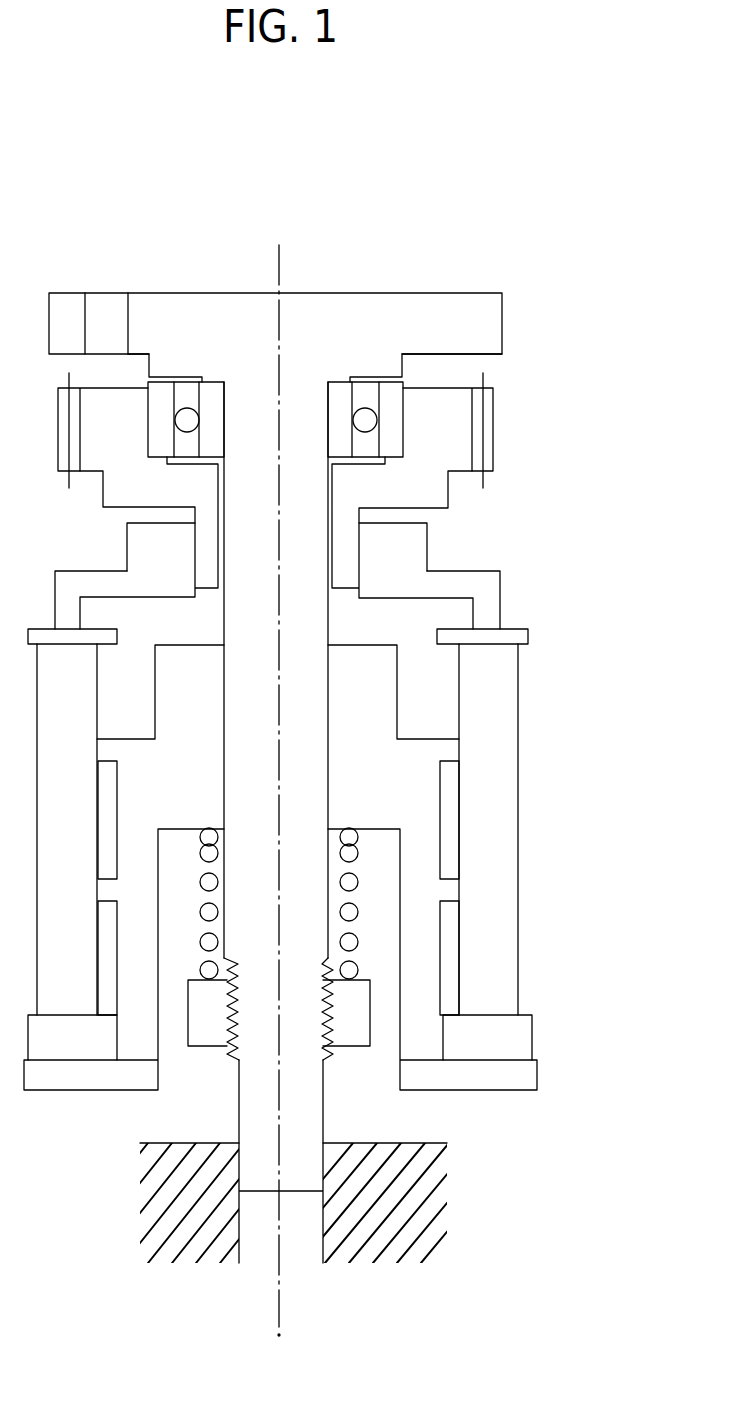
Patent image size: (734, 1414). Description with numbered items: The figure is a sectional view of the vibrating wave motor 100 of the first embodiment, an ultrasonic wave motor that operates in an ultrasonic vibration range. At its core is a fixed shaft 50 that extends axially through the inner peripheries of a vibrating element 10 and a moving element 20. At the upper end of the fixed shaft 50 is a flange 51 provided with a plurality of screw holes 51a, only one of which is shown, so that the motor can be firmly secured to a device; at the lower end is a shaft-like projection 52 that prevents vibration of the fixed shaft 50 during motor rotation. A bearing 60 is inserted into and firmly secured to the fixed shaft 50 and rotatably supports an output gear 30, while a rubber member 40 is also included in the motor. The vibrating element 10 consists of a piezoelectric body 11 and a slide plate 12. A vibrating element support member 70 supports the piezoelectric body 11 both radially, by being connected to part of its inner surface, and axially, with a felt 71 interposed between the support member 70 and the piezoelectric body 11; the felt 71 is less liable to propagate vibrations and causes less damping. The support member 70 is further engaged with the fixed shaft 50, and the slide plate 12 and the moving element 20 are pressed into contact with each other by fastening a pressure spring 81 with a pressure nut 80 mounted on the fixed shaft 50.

The vibrating wave motor 100 is at (607, 176).
The fixed shaft 50 is at (327, 313).
The flange 51 is at (484, 328).
The screw holes 51a is at (106, 308).
The bearing 60 is at (389, 423).
The output gear 30 is at (453, 453).
The rubber member 40 is at (415, 515).
The moving element 20 is at (486, 607).
The vibrating element 10 is at (593, 627).
The slide plate 12 is at (497, 640).
The piezoelectric body 11 is at (492, 703).
The vibrating element support member 70 is at (415, 804).
The pressure spring 81 is at (349, 912).
The pressure nut 80 is at (349, 1028).
The felt 71 is at (502, 1038).
The shaft-like projection 52 is at (302, 1161).